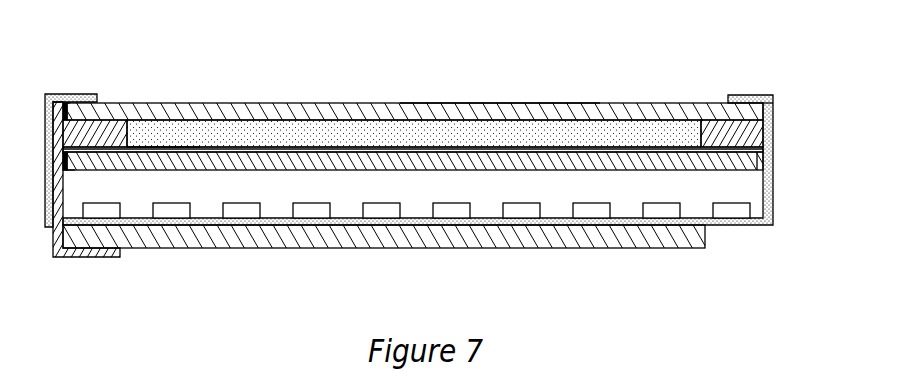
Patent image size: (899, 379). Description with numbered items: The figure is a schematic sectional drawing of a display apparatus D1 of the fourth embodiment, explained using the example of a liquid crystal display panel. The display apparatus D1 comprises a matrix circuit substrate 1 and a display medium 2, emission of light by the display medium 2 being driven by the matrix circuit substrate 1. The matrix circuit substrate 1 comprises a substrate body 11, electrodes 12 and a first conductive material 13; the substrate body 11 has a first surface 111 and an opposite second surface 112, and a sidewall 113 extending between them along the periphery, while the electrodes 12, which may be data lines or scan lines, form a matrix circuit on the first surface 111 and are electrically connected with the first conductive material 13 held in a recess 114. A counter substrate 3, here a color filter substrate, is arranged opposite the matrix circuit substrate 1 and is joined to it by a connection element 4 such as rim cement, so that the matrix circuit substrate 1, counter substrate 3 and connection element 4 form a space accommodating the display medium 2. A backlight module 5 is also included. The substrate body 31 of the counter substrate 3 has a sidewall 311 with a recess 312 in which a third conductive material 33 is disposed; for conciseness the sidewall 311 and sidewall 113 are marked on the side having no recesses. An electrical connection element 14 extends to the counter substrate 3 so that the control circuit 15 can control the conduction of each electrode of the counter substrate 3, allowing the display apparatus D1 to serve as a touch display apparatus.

The matrix circuit substrate 1 is at (764, 155).
The display medium 2 is at (601, 138).
The counter substrate 3 is at (515, 103).
The connection element 4 is at (748, 133).
The backlight module 5 is at (775, 208).
The substrate body 11 is at (410, 165).
The electrodes 12 is at (157, 147).
The first conductive material 13 is at (63, 153).
The electrical connection element 14 is at (93, 257).
The control circuit 15 is at (572, 237).
The substrate body of the counter substrate 31 is at (394, 115).
The third conductive material 33 is at (65, 103).
The first surface 111 is at (213, 152).
The second surface 112 is at (198, 170).
The sidewall 113 is at (773, 167).
The recess 114 is at (68, 170).
The sidewall 311 is at (768, 104).
The recess 312 is at (67, 112).
The display apparatus D1 is at (723, 58).